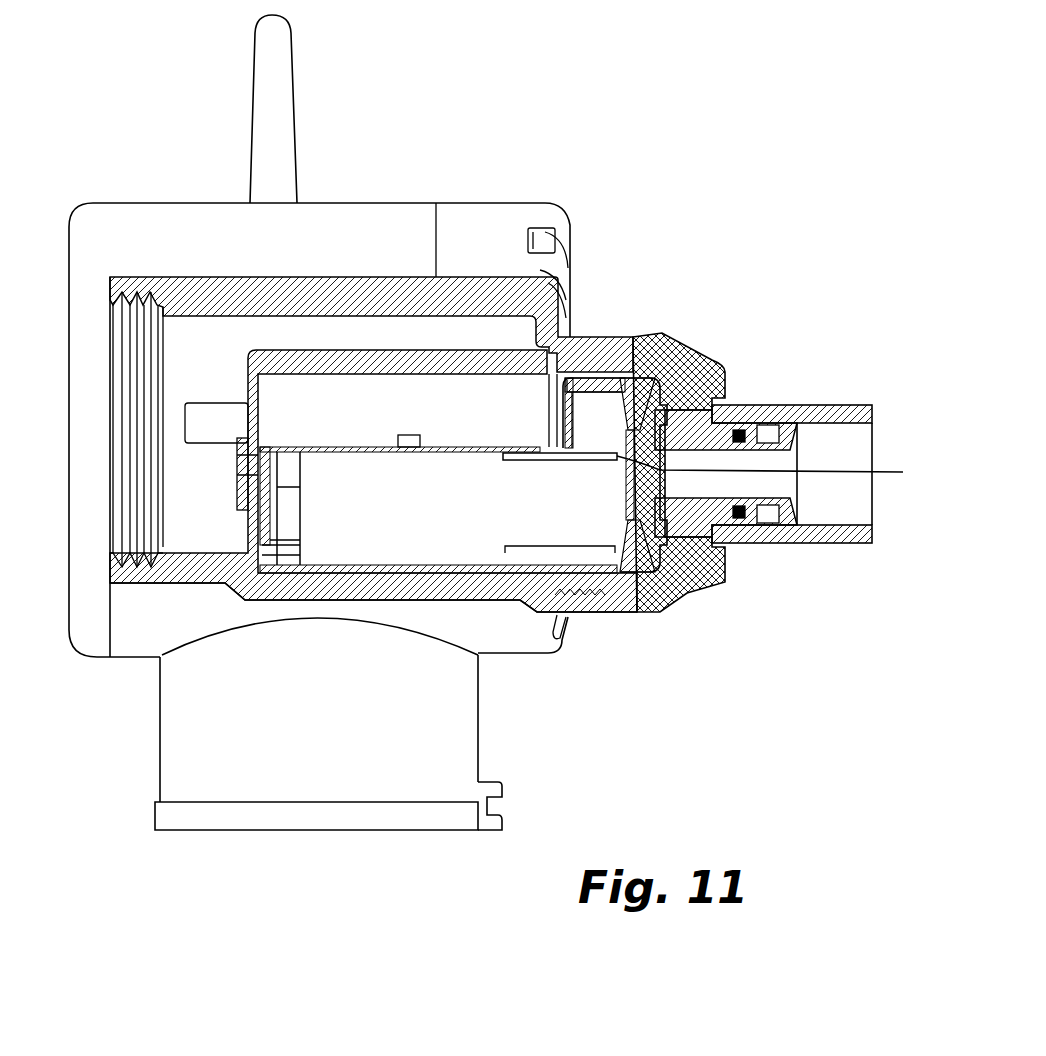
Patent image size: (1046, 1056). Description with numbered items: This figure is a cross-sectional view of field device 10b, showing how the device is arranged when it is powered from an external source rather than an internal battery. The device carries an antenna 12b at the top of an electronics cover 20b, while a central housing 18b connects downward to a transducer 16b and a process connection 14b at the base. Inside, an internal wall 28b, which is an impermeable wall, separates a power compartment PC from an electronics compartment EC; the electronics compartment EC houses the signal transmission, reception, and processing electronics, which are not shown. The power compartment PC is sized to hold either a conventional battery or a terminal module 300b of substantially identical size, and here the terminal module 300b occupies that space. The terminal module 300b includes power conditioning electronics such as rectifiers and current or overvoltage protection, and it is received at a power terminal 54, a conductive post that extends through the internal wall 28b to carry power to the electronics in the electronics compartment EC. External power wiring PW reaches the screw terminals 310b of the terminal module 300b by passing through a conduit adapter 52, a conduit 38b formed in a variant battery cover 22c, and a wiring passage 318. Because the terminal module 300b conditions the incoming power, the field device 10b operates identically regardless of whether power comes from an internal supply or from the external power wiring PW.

The field device 10b is at (708, 100).
The antenna 12b is at (278, 100).
The process connection 14b is at (212, 812).
The transducer 16b is at (278, 707).
The central housing 18b is at (493, 590).
The electronics cover 20b is at (86, 222).
The variant battery cover 22c is at (677, 583).
The internal wall 28b is at (475, 356).
The conduit 38b is at (765, 460).
The conduit adapter 52 is at (798, 538).
The power terminal 54 is at (238, 461).
The terminal module 300b is at (346, 480).
The screw terminals 310b is at (405, 436).
The wiring passage 318 is at (617, 458).
The electronics compartment EC is at (209, 336).
The power compartment PC is at (523, 397).
The power wiring PW is at (763, 460).